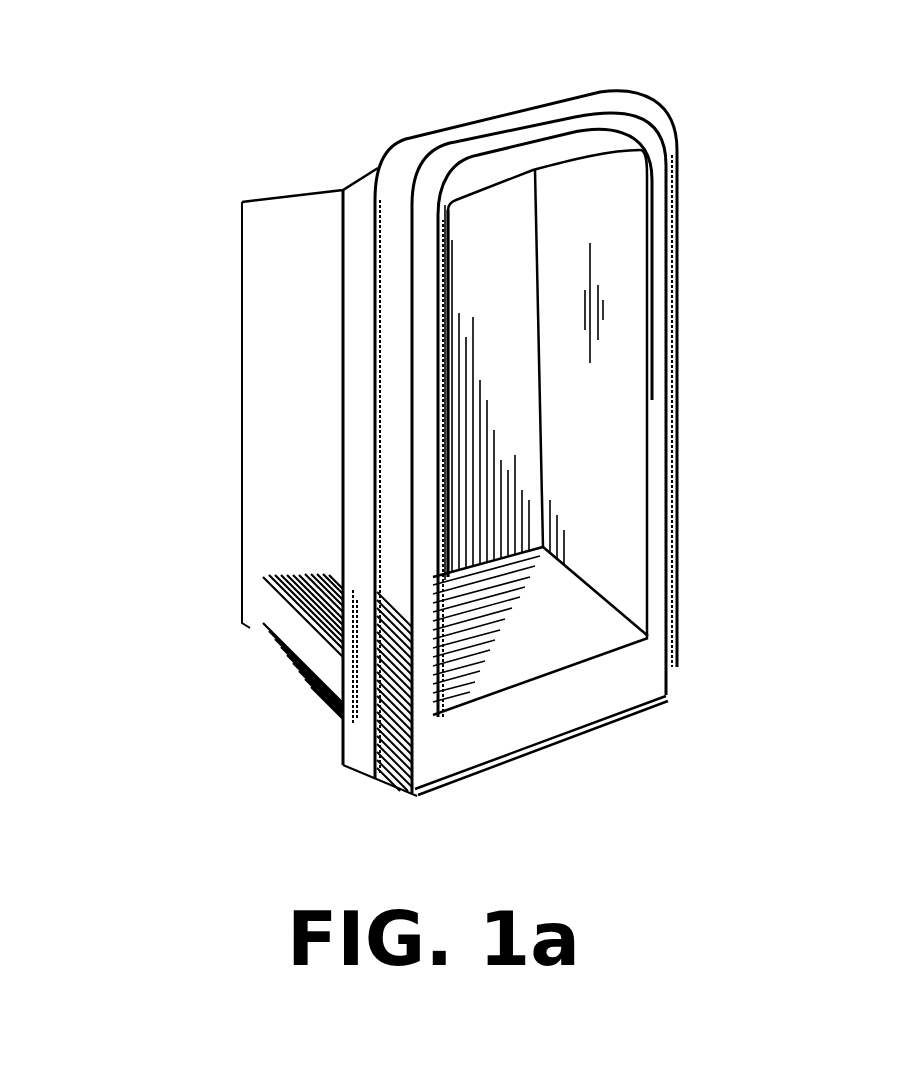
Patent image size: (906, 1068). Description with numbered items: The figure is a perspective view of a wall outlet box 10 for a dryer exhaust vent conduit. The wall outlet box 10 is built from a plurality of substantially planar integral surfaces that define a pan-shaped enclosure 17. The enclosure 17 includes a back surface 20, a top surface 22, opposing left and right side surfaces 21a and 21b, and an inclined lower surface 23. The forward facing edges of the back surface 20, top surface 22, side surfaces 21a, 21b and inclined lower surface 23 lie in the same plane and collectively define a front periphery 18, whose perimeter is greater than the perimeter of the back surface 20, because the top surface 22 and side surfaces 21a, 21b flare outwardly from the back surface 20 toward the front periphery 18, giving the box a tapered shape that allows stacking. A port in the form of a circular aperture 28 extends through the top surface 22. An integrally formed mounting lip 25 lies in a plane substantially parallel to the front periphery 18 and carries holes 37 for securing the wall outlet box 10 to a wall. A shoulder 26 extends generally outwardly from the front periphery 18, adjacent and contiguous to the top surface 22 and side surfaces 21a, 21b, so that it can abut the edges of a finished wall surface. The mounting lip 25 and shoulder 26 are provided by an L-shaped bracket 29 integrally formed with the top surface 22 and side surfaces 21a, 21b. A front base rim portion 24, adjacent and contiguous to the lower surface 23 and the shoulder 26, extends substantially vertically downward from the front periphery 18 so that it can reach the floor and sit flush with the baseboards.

The wall outlet box 10 is at (163, 772).
The pan-shaped enclosure 17 is at (615, 205).
The front periphery 18 is at (470, 152).
The back surface 20 is at (516, 196).
The left side surface 21a is at (263, 613).
The right side surface 21b is at (640, 330).
The top surface 22 is at (290, 186).
The inclined lower surface 23 is at (536, 675).
The front base rim portion 24 is at (650, 690).
The mounting lip 25 is at (357, 416).
The shoulder 26 is at (560, 115).
The aperture 28 is at (333, 188).
The L-shaped bracket 29 is at (395, 150).
The holes 37 is at (355, 284).